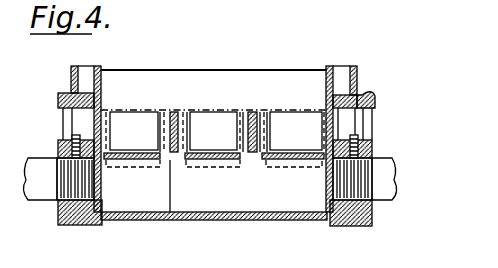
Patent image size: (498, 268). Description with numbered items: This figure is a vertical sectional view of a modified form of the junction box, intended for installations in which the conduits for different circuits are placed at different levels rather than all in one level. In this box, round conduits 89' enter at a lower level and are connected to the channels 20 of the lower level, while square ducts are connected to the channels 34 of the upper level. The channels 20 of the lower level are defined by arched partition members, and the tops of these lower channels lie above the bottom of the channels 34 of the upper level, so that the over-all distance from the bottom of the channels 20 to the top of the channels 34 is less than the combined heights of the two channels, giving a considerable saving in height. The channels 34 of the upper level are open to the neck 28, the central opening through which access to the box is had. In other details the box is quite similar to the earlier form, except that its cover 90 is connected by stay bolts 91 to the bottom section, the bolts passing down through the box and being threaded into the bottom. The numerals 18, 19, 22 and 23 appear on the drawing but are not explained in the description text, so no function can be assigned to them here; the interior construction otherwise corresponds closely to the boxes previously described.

The clamping nut 18 is at (294, 0).
The bearing boss 19 is at (347, 0).
The channels of the lower level 20 is at (438, 0).
The flange 22 is at (151, 70).
The bearing sleeve 23 is at (139, 49).
The neck 28 is at (327, 91).
The channels of the upper level 34 is at (211, 136).
The conduits 89' is at (237, 154).
The cover 90 is at (362, 92).
The stay bolts 91 is at (357, 118).